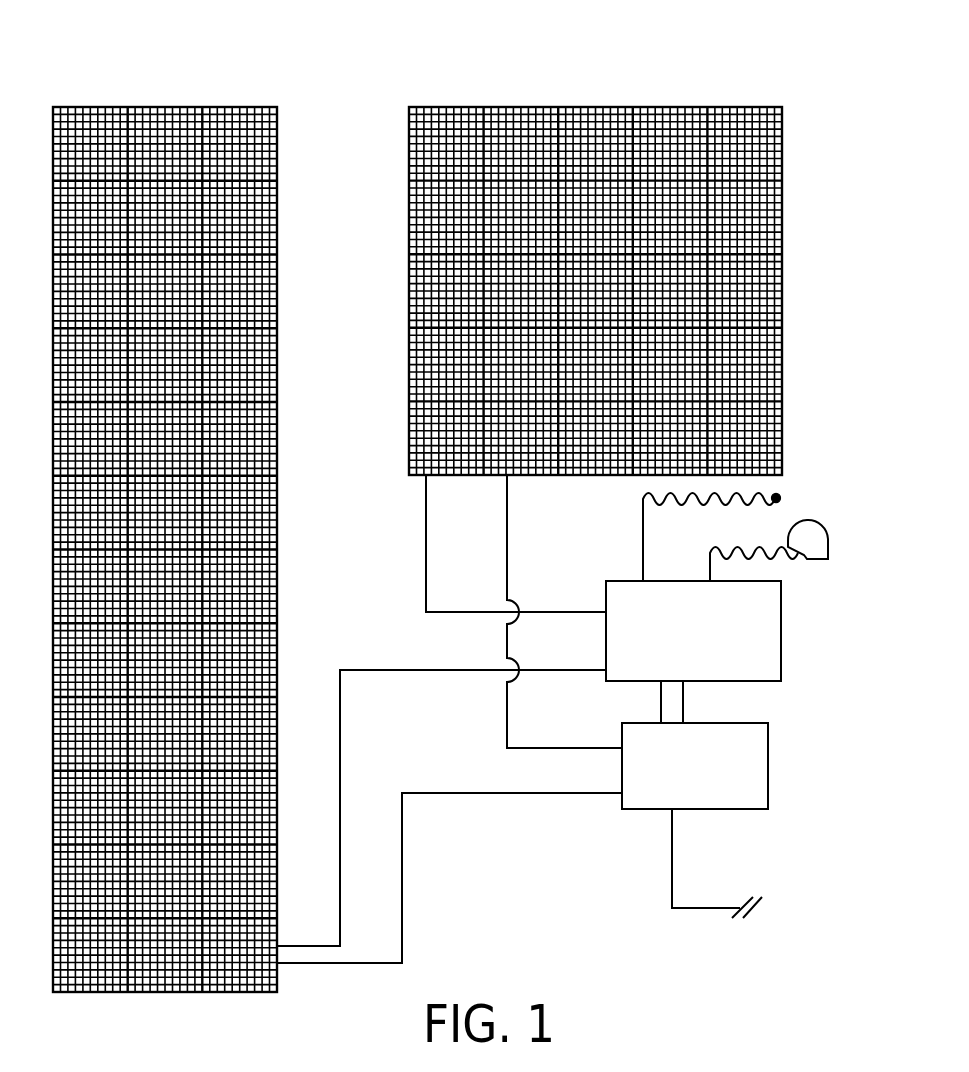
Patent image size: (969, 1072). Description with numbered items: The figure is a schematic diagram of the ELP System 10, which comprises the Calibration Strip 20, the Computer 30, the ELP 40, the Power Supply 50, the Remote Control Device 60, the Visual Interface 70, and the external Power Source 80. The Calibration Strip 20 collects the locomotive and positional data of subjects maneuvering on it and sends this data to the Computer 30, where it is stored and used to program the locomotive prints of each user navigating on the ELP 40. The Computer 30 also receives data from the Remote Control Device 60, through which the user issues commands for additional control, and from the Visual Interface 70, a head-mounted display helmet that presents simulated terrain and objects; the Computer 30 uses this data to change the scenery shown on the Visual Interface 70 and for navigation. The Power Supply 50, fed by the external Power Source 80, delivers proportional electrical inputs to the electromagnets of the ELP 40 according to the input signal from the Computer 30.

The ELP System 10 is at (331, 76).
The Calibration Strip 20 is at (277, 263).
The Computer 30 is at (781, 630).
The ELP 40 is at (782, 230).
The Power Supply 50 is at (768, 762).
The Remote Control Device 60 is at (780, 496).
The Visual Interface 70 is at (828, 537).
The external Power Source 80 is at (757, 905).